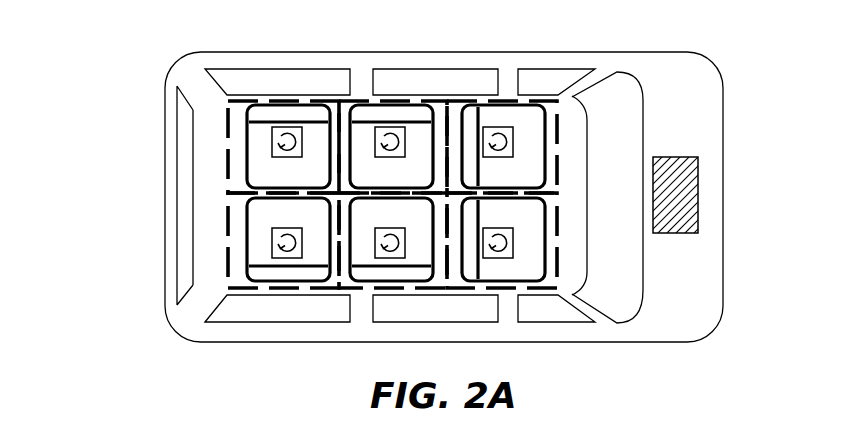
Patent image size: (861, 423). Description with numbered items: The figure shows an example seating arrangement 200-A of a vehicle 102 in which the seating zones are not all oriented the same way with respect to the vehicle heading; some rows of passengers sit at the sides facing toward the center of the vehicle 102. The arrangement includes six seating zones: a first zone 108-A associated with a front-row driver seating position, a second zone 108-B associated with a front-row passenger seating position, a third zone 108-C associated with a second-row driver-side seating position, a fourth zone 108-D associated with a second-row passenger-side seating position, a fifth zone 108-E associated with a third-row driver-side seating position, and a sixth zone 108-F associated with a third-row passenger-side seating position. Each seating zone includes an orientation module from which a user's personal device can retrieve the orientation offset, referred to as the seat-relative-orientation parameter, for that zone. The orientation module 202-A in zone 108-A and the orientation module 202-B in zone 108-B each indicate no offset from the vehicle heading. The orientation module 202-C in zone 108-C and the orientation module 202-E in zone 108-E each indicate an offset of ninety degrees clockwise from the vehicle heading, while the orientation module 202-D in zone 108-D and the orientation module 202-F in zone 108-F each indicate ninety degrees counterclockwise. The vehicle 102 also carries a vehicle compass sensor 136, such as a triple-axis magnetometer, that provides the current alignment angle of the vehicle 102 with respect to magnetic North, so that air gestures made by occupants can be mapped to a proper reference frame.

The seating arrangement 200-A is at (150, 31).
The vehicle 102 is at (164, 108).
The first zone 108-A is at (537, 95).
The second zone 108-B is at (503, 290).
The third zone 108-C is at (403, 98).
The fourth zone 108-D is at (393, 290).
The fifth zone 108-E is at (290, 100).
The sixth zone 108-F is at (283, 290).
The orientation module 202-A is at (513, 152).
The orientation module 202-B is at (513, 240).
The orientation module 202-C is at (382, 124).
The orientation module 202-D is at (386, 262).
The orientation module 202-E is at (270, 142).
The orientation module 202-F is at (270, 244).
The vehicle compass sensor 136 is at (673, 157).